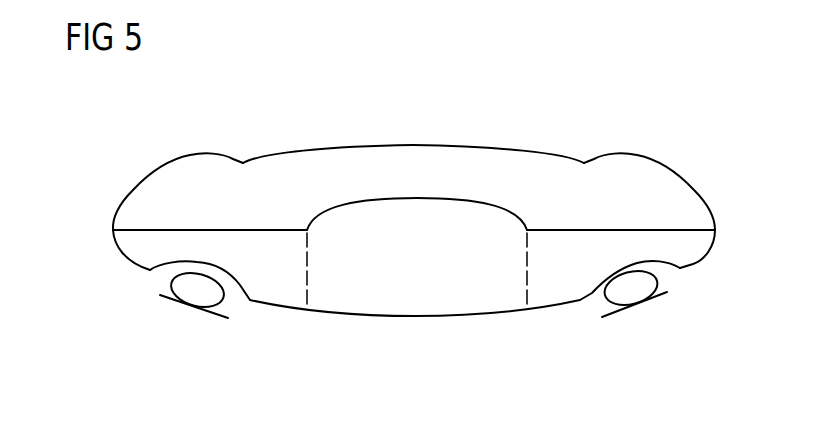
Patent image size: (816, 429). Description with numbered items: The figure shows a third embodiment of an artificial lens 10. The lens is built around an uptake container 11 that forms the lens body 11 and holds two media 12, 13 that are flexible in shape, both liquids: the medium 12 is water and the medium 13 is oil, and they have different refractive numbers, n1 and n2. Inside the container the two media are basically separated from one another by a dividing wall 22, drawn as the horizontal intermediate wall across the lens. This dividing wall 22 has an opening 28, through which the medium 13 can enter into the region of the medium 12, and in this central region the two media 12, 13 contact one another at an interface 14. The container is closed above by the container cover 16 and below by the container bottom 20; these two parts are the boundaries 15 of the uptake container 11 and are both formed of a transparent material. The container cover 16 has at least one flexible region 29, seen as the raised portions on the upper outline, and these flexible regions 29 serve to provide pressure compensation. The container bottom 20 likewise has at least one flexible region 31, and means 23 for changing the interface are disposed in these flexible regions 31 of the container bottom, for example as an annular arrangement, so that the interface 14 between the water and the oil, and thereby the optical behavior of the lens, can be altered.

The artificial lens 10 is at (258, 86).
The uptake container 11 is at (108, 193).
The medium 12 is at (421, 158).
The medium 13 is at (427, 303).
The interface 14 is at (477, 205).
The boundaries 15 is at (357, 130).
The container cover 16 is at (490, 148).
The container bottom 20 is at (492, 315).
The dividing wall 22 is at (222, 230).
The means for changing the interface 23 is at (188, 324).
The opening 28 is at (358, 216).
The flexible region 29 is at (188, 154).
The flexible region 31 is at (233, 278).